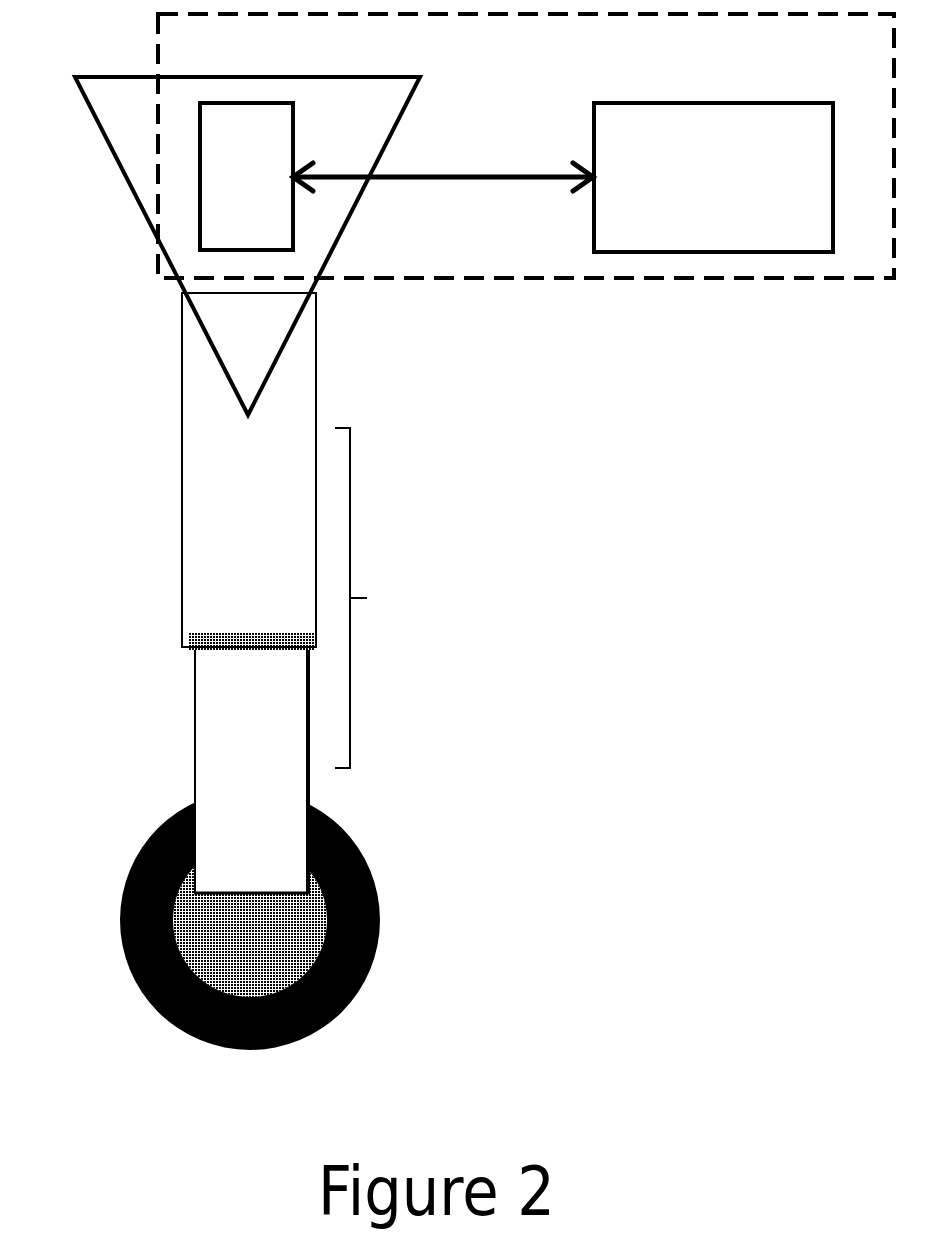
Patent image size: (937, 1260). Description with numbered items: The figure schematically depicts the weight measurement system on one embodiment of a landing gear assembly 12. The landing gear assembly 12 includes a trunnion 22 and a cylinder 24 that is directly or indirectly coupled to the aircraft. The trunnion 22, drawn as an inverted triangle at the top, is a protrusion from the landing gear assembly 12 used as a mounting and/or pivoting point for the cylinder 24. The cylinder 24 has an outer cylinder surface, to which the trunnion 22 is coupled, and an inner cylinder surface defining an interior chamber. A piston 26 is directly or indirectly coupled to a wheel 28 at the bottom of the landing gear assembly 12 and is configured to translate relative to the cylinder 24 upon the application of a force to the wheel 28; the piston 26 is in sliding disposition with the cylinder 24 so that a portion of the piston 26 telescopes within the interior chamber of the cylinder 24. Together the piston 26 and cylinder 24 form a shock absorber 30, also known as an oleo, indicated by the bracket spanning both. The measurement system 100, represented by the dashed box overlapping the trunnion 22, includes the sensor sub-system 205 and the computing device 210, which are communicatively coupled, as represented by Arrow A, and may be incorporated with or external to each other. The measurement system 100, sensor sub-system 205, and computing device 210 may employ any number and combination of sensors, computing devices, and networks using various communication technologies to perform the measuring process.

The measurement system 100 is at (880, 74).
The sensor sub-system 205 is at (246, 176).
The computing device 210 is at (713, 177).
The Arrow A is at (508, 177).
The trunnion 22 is at (247, 246).
The cylinder 24 is at (249, 471).
The piston 26 is at (252, 771).
The wheel 28 is at (138, 848).
The shock absorber 30 is at (373, 598).
The landing gear assembly 12 is at (100, 425).